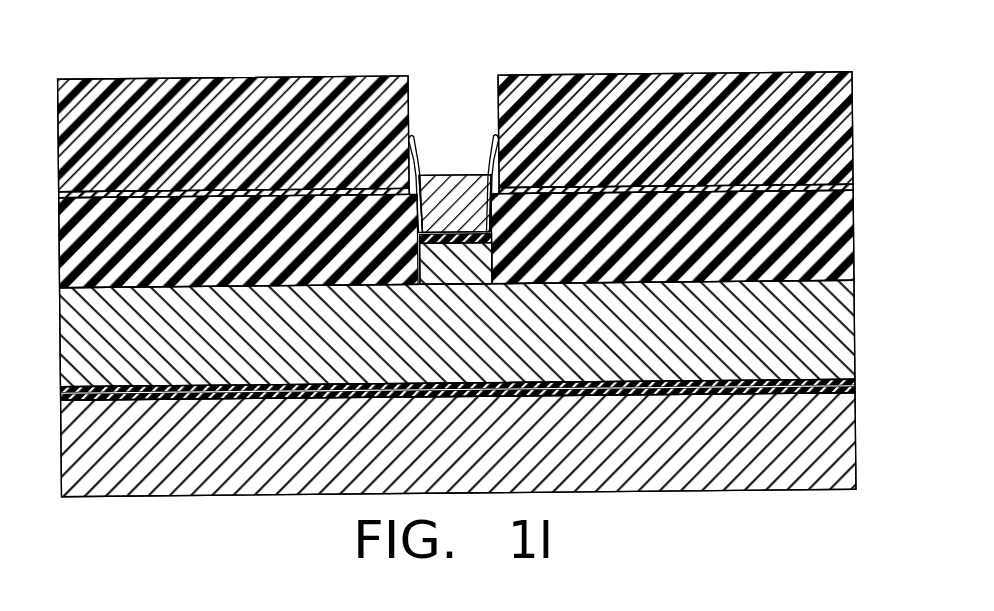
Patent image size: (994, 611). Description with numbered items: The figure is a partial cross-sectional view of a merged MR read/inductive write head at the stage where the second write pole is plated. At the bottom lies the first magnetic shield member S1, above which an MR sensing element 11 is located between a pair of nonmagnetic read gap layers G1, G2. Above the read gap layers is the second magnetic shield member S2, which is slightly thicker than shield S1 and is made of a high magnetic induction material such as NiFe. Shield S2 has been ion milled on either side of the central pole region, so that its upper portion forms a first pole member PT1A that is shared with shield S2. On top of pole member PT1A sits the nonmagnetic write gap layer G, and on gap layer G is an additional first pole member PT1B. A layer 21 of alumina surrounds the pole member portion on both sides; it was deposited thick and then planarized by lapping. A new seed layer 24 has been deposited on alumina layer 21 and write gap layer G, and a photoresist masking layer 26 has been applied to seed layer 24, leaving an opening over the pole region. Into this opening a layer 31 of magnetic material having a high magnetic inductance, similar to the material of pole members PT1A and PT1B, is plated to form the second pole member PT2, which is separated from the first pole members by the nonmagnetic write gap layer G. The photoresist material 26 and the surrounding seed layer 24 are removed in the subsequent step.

The photoresist masking layer 26 is at (93, 108).
The seed layer 24 is at (499, 216).
The layer of alumina 21 is at (68, 232).
The layer of magnetic material 31 is at (450, 176).
The second pole member PT2 is at (479, 215).
The nonmagnetic write gap layer G is at (505, 242).
The additional first pole member PT1B is at (488, 281).
The first pole member PT1A is at (488, 341).
The second magnetic shield member S2 is at (716, 348).
The first read gap layer G1 is at (856, 386).
The second read gap layer G2 is at (856, 393).
The first magnetic shield member S1 is at (716, 452).
The MR sensing element 11 is at (460, 398).